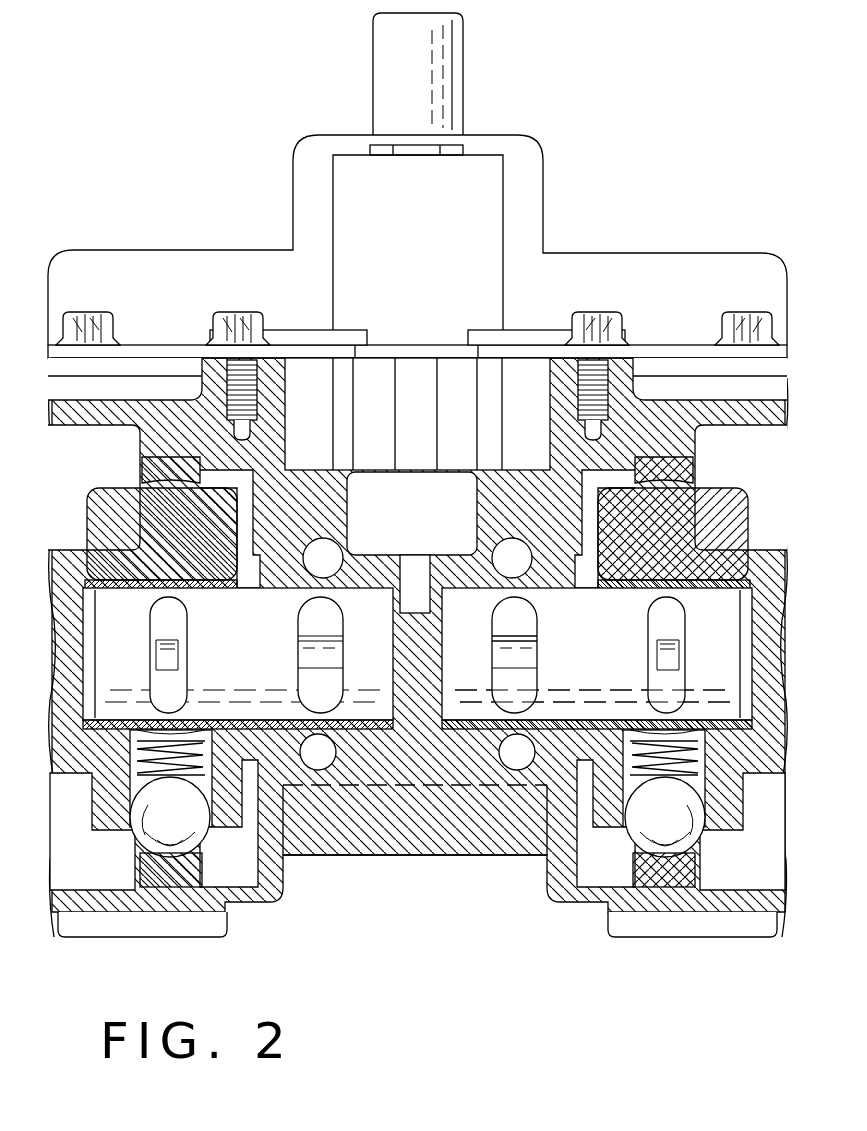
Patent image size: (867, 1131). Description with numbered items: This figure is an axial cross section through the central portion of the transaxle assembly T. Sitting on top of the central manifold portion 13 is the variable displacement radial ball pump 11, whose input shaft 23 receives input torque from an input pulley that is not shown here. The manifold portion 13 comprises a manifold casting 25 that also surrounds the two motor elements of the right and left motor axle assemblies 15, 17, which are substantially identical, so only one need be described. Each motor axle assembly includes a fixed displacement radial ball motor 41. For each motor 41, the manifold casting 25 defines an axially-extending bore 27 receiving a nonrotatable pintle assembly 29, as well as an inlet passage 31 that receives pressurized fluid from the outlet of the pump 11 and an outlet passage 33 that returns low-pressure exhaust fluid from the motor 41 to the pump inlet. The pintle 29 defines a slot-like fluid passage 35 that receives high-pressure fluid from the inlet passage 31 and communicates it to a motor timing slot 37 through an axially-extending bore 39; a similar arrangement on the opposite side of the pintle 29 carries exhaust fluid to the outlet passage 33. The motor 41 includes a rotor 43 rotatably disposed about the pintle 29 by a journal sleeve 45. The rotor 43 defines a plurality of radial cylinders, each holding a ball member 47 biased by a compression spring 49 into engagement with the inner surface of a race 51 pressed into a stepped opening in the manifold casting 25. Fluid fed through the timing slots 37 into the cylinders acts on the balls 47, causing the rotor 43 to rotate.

The transaxle assembly T is at (222, 104).
The variable displacement radial ball pump 11 is at (582, 242).
The central manifold portion 13 is at (377, 874).
The right motor axle assembly 15 is at (668, 337).
The left motor axle assembly 17 is at (148, 337).
The input shaft 23 is at (450, 78).
The manifold casting 25 is at (486, 826).
The axially-extending bore 27 is at (570, 590).
The pintle assembly 29 is at (595, 670).
The inlet passage 31 is at (498, 556).
The outlet passage 33 is at (502, 745).
The slot-like fluid passage 35 is at (533, 710).
The motor timing slot 37 is at (652, 710).
The axially-extending bore 39 is at (497, 658).
The radial ball motor 41 is at (116, 944).
The rotor 43 is at (722, 506).
The journal sleeve 45 is at (680, 578).
The ball member 47 is at (647, 828).
The compression spring 49 is at (708, 760).
The race 51 is at (684, 872).